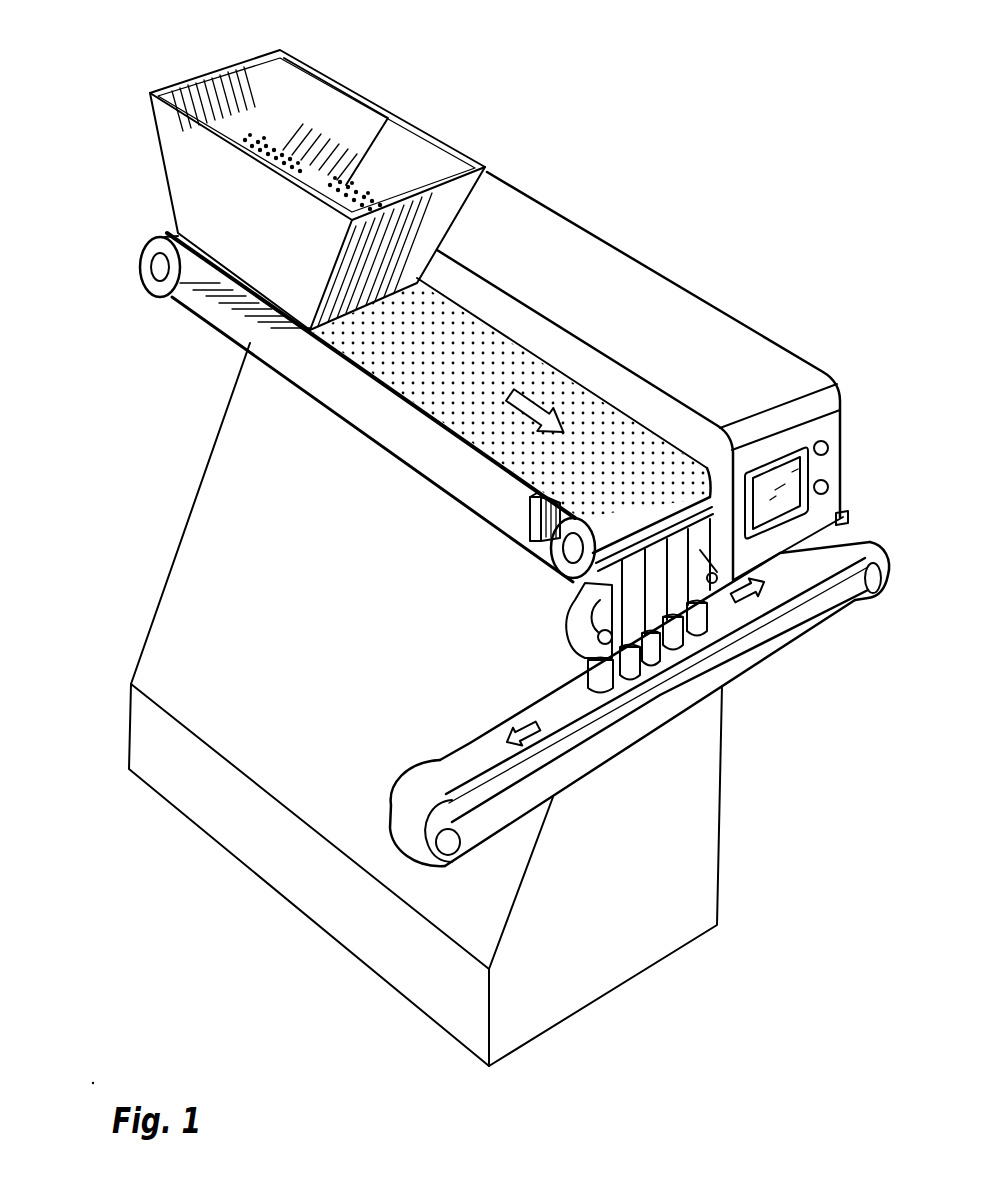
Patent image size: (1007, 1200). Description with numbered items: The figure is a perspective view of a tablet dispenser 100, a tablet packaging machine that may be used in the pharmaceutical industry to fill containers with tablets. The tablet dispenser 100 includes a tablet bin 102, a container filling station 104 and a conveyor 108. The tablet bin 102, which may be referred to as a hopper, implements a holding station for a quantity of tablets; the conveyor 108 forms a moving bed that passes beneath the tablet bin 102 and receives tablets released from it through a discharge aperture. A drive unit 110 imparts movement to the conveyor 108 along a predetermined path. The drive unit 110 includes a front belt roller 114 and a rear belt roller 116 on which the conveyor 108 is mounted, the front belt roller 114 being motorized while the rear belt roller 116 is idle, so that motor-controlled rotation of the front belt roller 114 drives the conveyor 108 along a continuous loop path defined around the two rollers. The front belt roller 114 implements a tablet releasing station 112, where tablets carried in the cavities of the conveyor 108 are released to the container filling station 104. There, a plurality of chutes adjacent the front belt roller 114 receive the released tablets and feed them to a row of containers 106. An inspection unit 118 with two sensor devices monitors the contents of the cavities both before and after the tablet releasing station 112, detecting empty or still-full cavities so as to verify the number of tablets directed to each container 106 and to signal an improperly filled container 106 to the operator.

The tablet dispenser 100 is at (600, 206).
The tablet bin 102 is at (333, 104).
The container filling station 104 is at (720, 580).
The containers 106 is at (722, 772).
The conveyor 108 is at (463, 410).
The drive unit 110 is at (152, 290).
The tablet releasing station 112 is at (670, 487).
The front belt roller 114 is at (575, 570).
The rear belt roller 116 is at (150, 245).
The inspection unit 118 is at (533, 520).